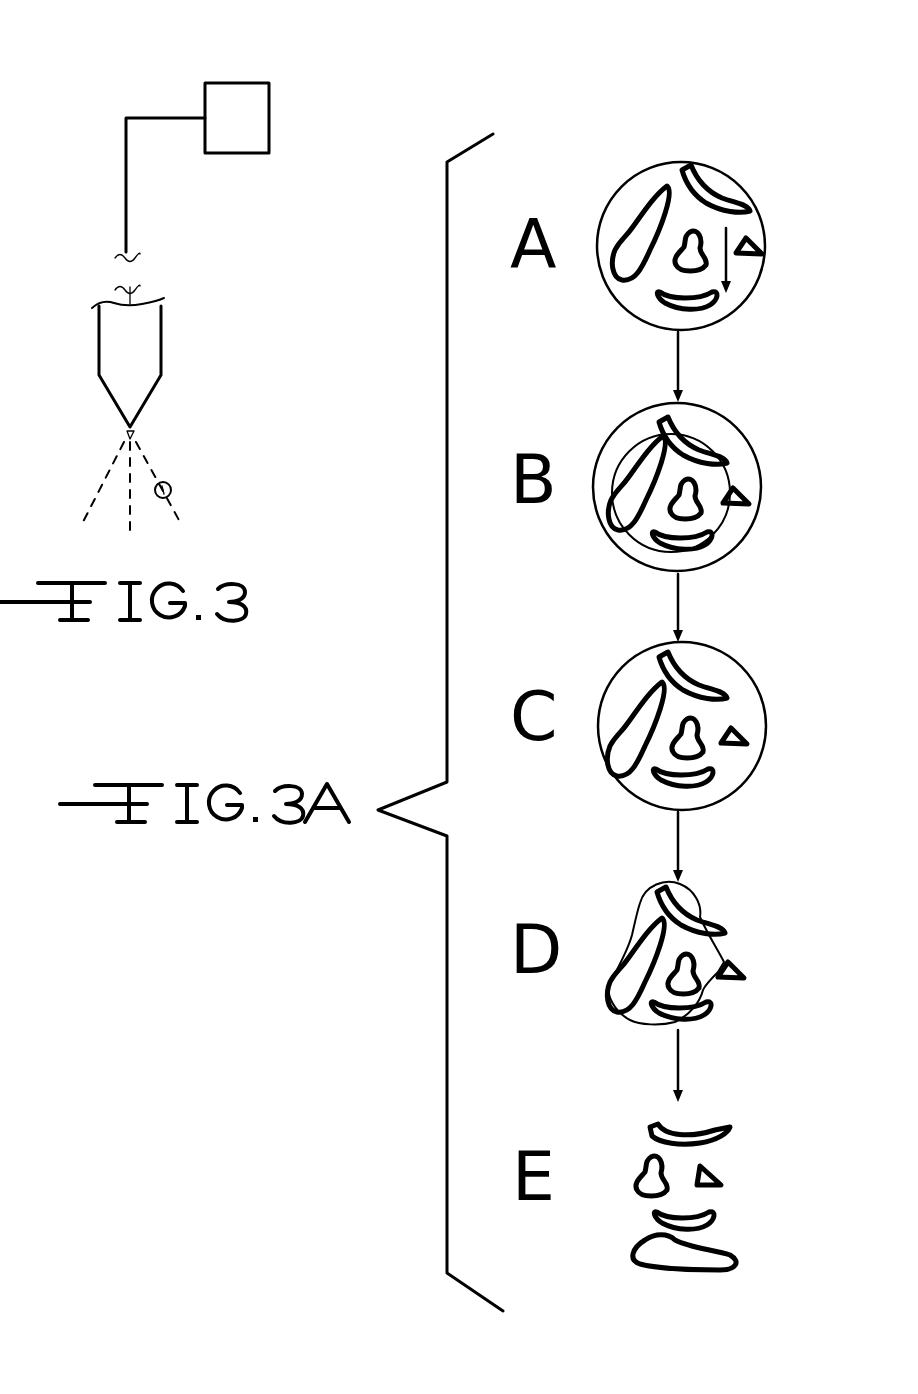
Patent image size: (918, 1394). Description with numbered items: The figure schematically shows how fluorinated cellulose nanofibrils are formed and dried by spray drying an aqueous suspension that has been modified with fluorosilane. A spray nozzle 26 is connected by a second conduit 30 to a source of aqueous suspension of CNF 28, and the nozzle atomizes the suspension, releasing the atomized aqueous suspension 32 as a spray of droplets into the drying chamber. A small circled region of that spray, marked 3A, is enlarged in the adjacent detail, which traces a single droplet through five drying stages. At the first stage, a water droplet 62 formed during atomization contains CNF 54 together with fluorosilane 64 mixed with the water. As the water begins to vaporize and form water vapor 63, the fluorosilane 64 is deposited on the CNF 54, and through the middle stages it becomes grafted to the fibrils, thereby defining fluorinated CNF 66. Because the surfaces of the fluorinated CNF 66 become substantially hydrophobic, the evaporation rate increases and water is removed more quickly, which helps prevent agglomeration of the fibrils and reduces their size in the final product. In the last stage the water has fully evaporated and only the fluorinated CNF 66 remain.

In FIG. 3, the spray nozzle 26 is at (155, 337).
In FIG. 3, the source of aqueous suspension of CNF 28 is at (245, 92).
In FIG. 3, the second conduit 30 is at (126, 148).
In FIG. 3, the atomized aqueous suspension 32 is at (103, 483).
In FIG. 3, the detail view reference 3A is at (170, 483).
In FIG. 3A, the CNF 54 is at (622, 294).
In FIG. 3A, the water droplets 62 is at (717, 176).
In FIG. 3A, the water vapor 63 is at (721, 418).
In FIG. 3A, the fluorosilane 64 is at (658, 172).
In FIG. 3A, the fluorinated CNF 66 is at (702, 540).